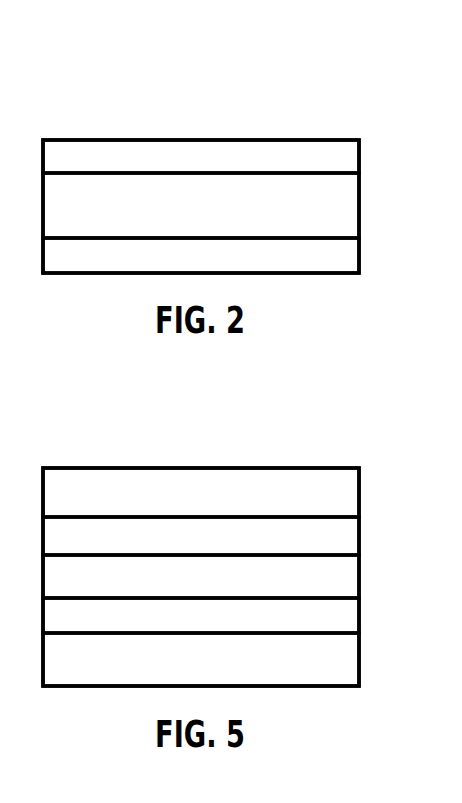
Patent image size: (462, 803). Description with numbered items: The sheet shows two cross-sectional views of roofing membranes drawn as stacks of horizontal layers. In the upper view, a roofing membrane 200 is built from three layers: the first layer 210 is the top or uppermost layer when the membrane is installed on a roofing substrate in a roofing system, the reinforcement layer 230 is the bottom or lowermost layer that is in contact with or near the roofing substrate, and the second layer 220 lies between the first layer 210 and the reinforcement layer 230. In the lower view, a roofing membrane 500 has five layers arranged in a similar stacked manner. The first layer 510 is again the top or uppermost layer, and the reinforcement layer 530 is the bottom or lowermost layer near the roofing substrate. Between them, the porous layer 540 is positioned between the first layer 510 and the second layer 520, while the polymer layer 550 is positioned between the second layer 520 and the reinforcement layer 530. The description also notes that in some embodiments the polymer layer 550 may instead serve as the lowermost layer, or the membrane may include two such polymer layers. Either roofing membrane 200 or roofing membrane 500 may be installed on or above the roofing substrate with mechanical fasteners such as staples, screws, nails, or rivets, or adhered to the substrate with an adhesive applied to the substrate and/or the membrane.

In FIG. 2, the roofing membrane 200 is at (259, 97).
In FIG. 2, the first layer 210 is at (187, 168).
In FIG. 2, the second layer 220 is at (187, 220).
In FIG. 2, the reinforcement layer 230 is at (187, 268).
In FIG. 5, the roofing membrane 500 is at (264, 434).
In FIG. 5, the first layer 510 is at (187, 505).
In FIG. 5, the porous layer 540 is at (187, 548).
In FIG. 5, the second layer 520 is at (187, 590).
In FIG. 5, the polymer layer 550 is at (187, 628).
In FIG. 5, the reinforcement layer 530 is at (187, 676).